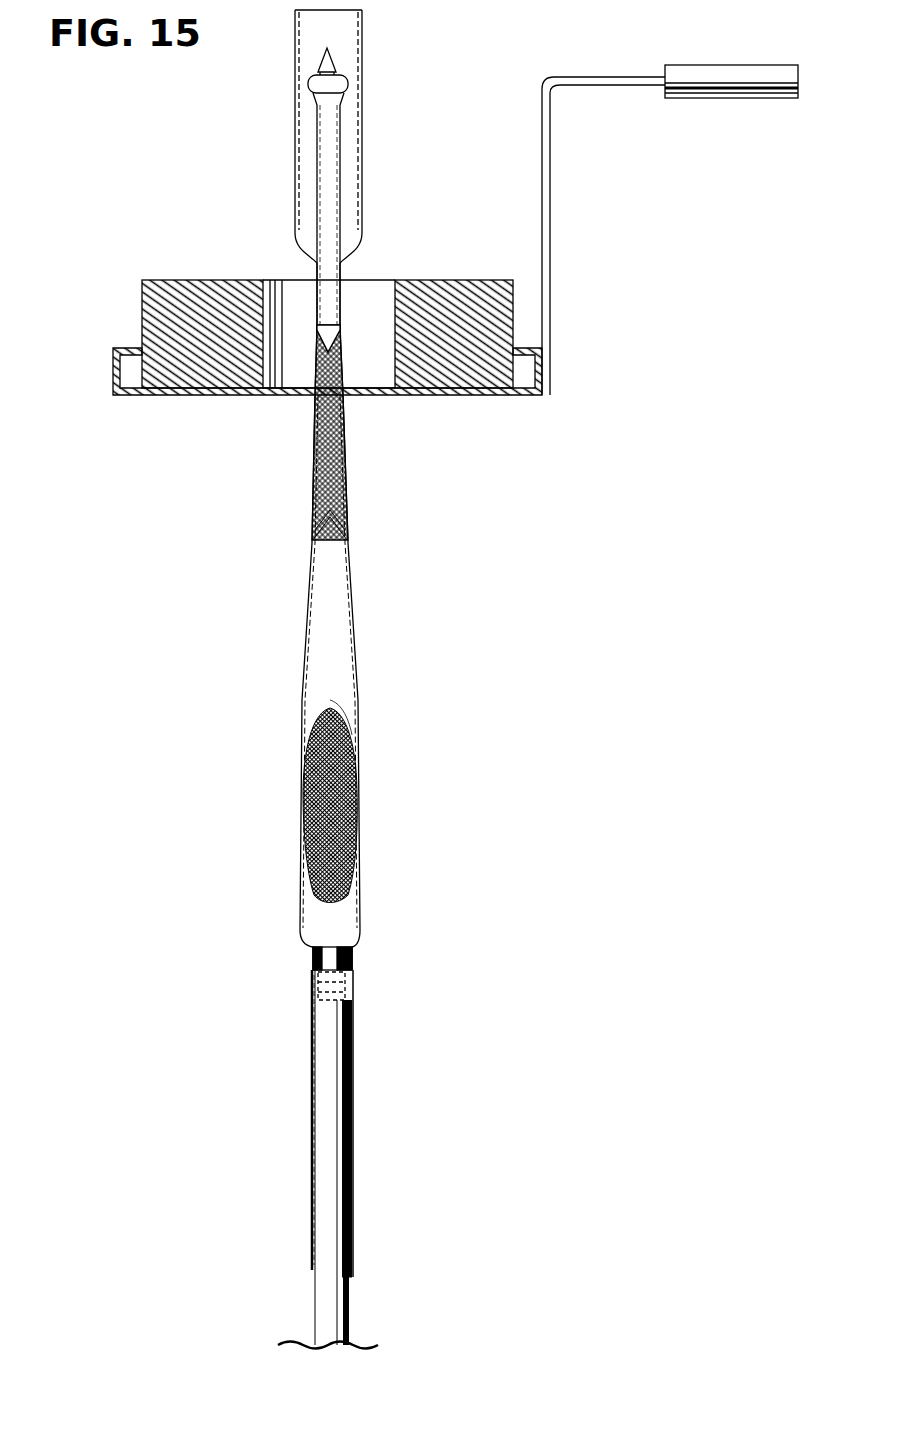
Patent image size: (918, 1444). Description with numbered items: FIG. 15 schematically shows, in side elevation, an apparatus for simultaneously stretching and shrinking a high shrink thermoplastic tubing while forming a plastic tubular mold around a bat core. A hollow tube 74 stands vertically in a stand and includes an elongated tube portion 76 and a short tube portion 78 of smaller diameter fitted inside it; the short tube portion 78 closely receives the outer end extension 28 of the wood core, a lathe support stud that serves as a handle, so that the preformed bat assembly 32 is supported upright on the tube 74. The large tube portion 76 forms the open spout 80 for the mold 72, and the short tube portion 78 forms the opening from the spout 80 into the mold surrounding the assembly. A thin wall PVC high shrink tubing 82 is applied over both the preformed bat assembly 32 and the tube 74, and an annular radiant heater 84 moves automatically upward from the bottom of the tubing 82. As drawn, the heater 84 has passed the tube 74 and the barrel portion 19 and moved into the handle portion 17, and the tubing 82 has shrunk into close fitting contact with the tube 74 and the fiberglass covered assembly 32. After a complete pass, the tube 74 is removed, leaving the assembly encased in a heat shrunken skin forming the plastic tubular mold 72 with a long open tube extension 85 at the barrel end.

The high shrink tubing 82 is at (363, 152).
The handle portion 17 is at (314, 455).
The annular radiant heater 84 is at (463, 412).
The barrel portion 19 is at (300, 807).
The preformed bat assembly 32 is at (338, 697).
The plastic tubular mold 72 is at (374, 790).
The outer end extension 28 is at (350, 957).
The short tube portion 78 is at (313, 962).
The elongated tube portion 76 is at (318, 1072).
The open tube extension 85 is at (352, 1135).
The open spout 80 is at (352, 1275).
The tube 74 is at (334, 1323).